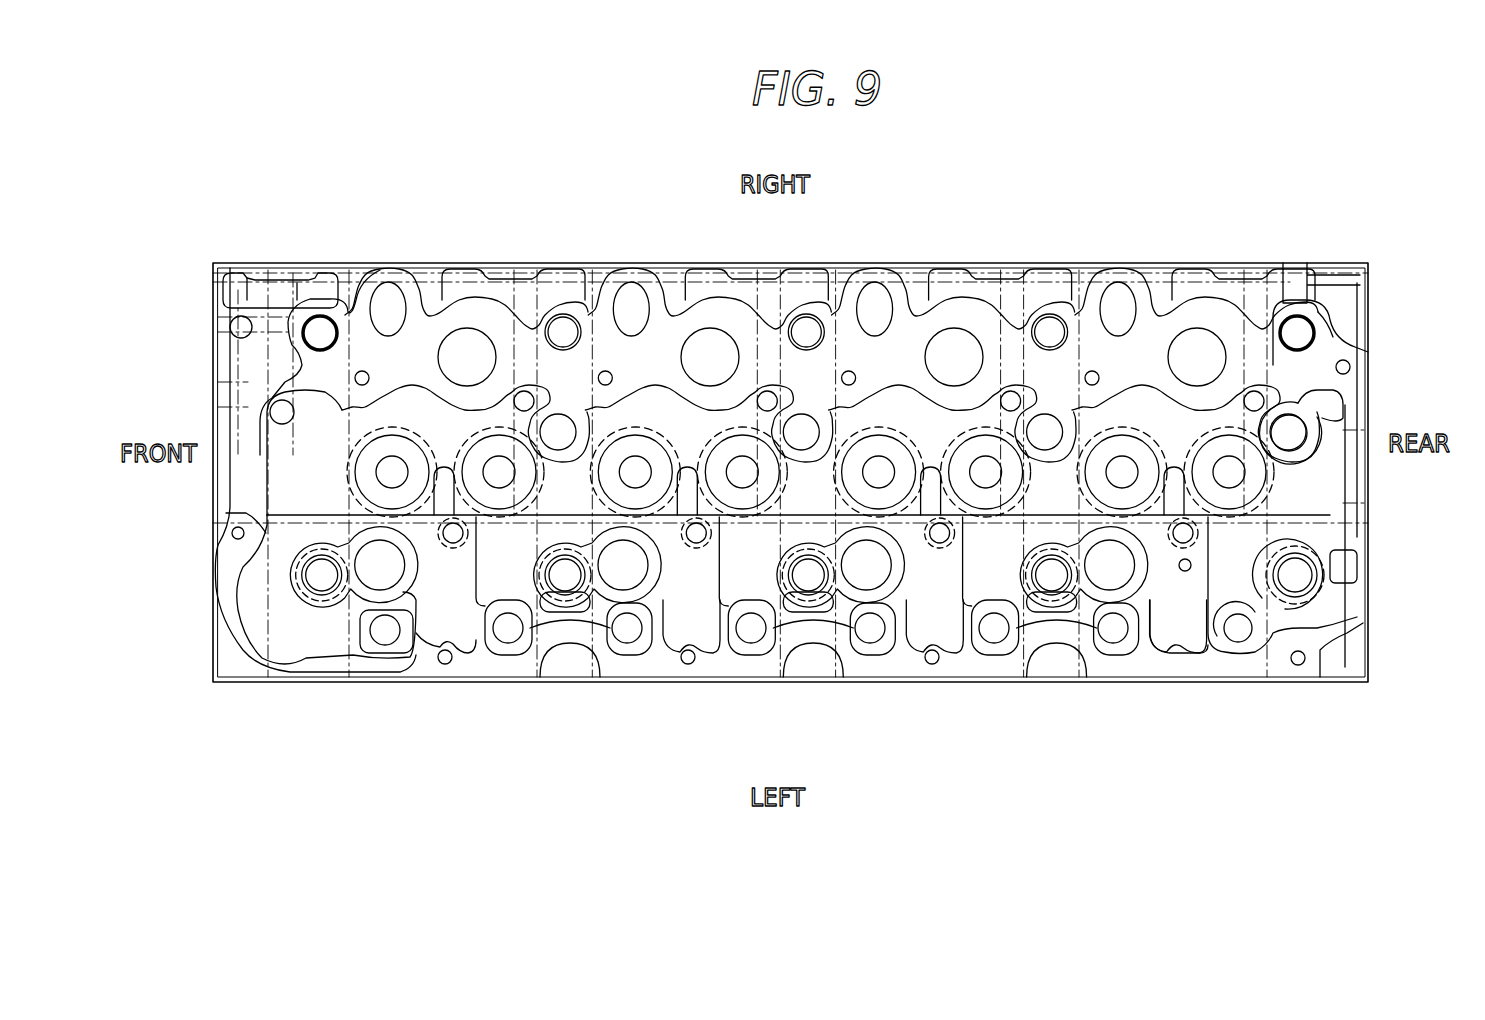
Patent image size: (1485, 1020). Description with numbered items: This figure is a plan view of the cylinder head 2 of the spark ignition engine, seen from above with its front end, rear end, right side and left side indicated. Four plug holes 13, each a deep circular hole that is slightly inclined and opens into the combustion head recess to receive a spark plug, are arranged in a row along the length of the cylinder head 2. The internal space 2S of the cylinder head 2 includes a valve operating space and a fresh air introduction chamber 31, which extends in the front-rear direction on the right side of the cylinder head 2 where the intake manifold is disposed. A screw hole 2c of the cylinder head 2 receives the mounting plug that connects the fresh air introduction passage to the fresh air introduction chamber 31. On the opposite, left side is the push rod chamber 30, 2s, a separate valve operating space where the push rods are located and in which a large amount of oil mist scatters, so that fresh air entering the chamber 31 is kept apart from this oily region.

The cylinder head 2 is at (1280, 247).
The screw hole 2c is at (262, 268).
The fresh air introduction chamber 31 is at (373, 236).
The internal space of the cylinder head 2S is at (297, 283).
The plug hole 13 is at (470, 345).
The push rod chamber 30 is at (816, 702).
The bolt insertion portion 2s is at (380, 630).